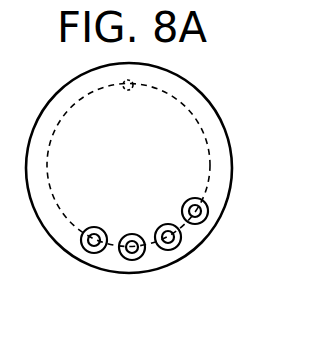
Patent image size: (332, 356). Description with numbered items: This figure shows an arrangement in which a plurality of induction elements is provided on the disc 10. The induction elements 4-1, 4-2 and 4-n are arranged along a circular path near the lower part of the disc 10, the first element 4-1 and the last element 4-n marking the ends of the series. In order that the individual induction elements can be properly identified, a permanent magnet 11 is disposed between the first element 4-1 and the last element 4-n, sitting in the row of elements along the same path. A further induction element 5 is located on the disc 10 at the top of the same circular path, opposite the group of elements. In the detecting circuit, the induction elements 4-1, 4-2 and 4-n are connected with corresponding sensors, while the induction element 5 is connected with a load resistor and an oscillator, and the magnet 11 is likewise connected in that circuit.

The disc 10 is at (228, 169).
The induction element 5 is at (129, 90).
The permanent magnet 11 is at (131, 234).
The induction element 4-n is at (91, 252).
The induction element 4-1 is at (168, 250).
The induction element 4-2 is at (201, 222).